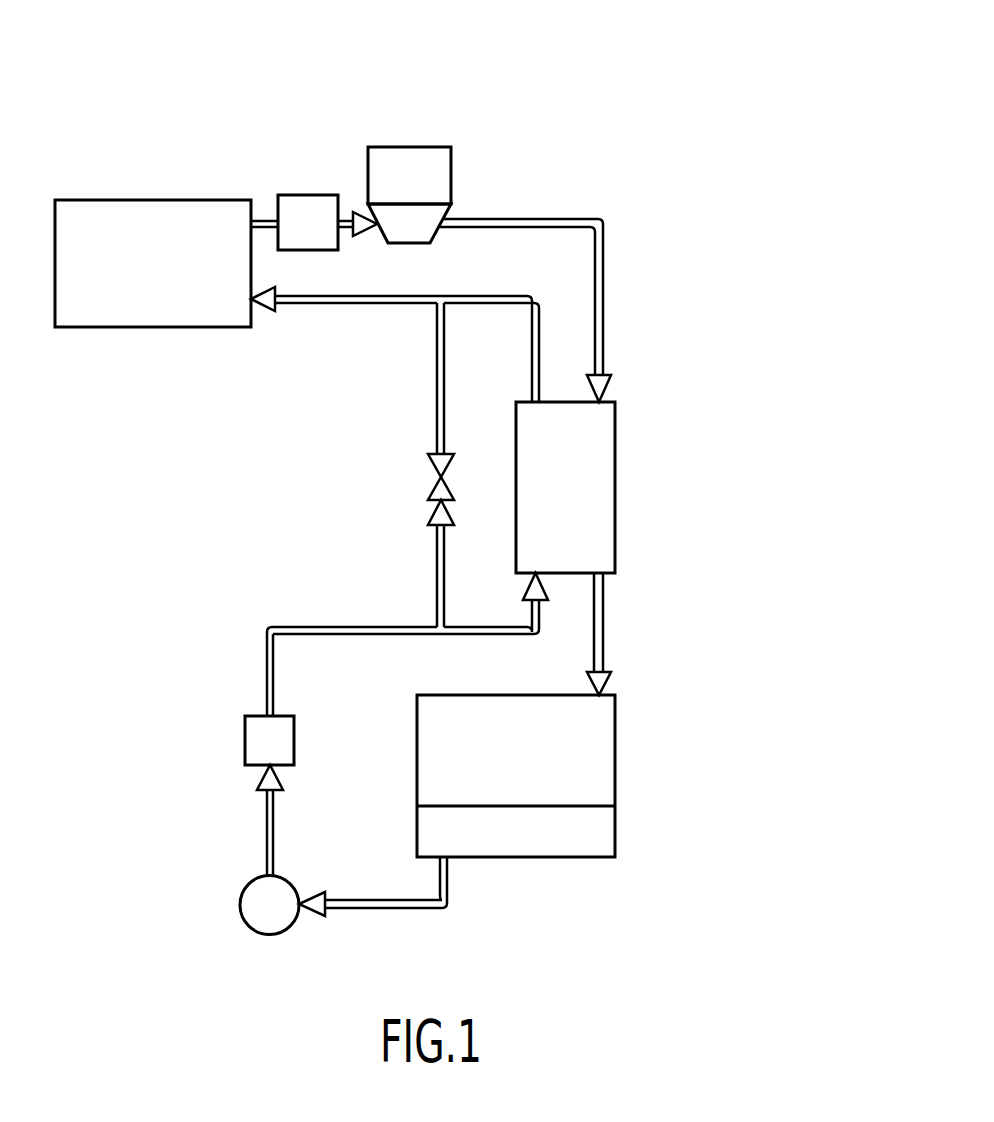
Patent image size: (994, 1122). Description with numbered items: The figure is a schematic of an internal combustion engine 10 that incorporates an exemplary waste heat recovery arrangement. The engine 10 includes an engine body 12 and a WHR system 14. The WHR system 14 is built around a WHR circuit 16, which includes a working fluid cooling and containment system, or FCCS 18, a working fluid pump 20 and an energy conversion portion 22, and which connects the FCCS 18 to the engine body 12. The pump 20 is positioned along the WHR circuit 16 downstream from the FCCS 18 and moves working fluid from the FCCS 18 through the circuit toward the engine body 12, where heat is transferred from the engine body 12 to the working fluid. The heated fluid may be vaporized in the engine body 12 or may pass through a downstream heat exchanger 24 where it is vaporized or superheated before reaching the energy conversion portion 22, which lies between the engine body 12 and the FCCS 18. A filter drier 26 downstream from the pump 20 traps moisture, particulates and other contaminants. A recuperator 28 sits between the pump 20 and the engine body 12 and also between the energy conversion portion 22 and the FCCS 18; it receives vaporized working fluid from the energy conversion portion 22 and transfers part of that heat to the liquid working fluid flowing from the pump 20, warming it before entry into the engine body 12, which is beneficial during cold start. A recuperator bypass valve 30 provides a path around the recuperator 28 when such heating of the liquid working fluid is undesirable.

The internal combustion engine 10 is at (690, 111).
The engine body 12 is at (132, 200).
The WHR system 14 is at (670, 769).
The WHR circuit 16 is at (614, 333).
The working fluid cooling and containment system 18 is at (609, 875).
The working fluid pump 20 is at (246, 920).
The energy conversion portion 22 is at (467, 136).
The heat exchanger 24 is at (300, 195).
The filter drier 26 is at (245, 737).
The recuperator 28 is at (615, 533).
The recuperator bypass valve 30 is at (428, 463).